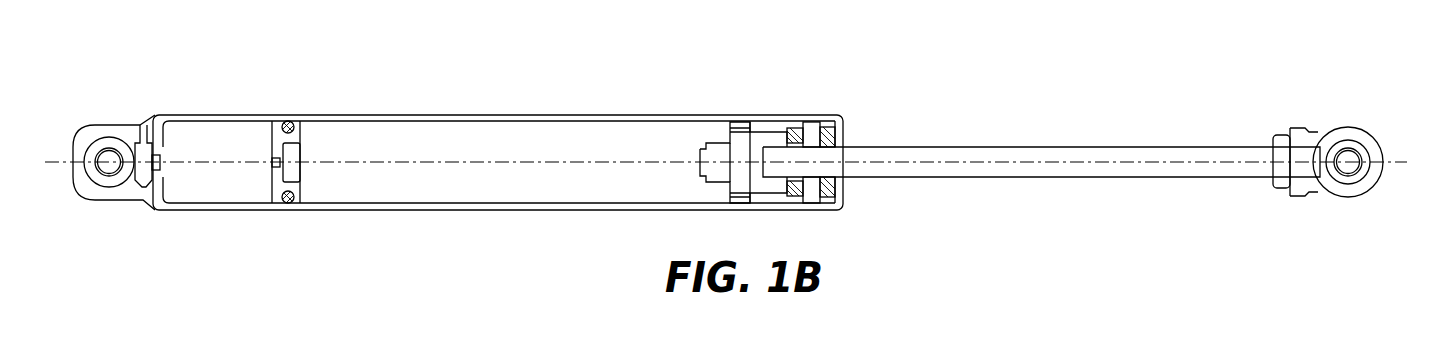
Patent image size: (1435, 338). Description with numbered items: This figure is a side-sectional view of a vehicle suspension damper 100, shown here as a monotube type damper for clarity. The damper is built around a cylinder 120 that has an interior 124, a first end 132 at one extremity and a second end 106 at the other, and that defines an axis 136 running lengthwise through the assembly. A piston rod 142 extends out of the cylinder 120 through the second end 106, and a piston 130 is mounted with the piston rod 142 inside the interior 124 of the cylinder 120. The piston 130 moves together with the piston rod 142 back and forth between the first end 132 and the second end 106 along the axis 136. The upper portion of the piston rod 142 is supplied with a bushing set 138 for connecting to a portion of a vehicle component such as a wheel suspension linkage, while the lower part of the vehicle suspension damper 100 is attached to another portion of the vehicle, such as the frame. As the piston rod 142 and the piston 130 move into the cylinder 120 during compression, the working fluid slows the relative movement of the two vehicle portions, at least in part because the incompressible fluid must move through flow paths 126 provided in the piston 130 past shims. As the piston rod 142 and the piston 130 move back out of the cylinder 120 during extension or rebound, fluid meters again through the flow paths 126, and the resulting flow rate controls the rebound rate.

The vehicle suspension damper 100 is at (286, 68).
The cylinder 120 is at (495, 113).
The first end 132 is at (155, 212).
The interior 124 is at (337, 182).
The flow paths 126 is at (742, 130).
The piston 130 is at (740, 185).
The second end 106 is at (815, 121).
The piston rod 142 is at (1048, 177).
The axis 136 is at (1393, 162).
The bushing set 138 is at (1348, 127).